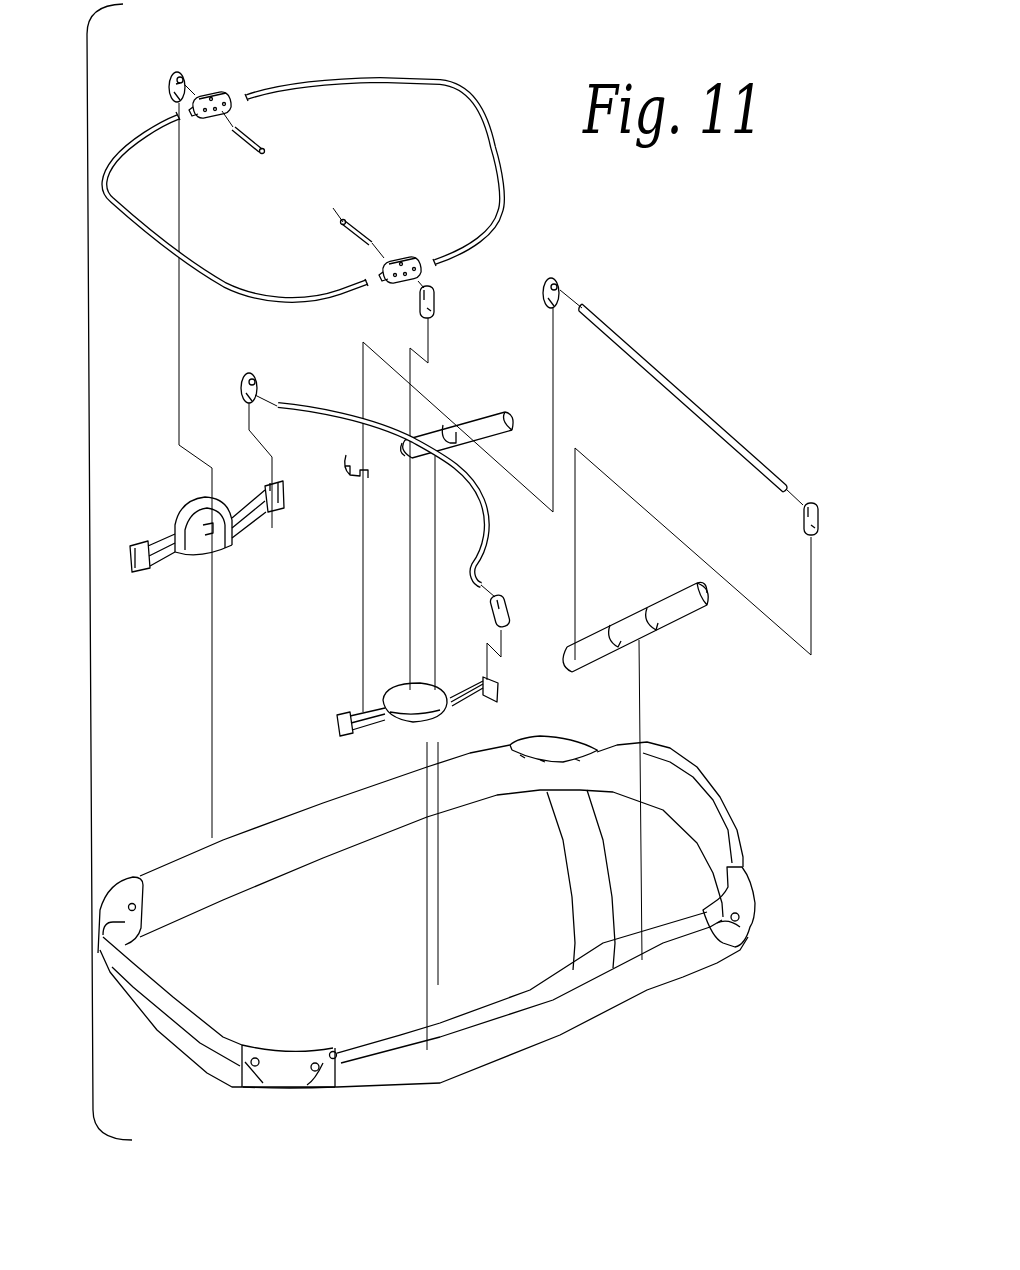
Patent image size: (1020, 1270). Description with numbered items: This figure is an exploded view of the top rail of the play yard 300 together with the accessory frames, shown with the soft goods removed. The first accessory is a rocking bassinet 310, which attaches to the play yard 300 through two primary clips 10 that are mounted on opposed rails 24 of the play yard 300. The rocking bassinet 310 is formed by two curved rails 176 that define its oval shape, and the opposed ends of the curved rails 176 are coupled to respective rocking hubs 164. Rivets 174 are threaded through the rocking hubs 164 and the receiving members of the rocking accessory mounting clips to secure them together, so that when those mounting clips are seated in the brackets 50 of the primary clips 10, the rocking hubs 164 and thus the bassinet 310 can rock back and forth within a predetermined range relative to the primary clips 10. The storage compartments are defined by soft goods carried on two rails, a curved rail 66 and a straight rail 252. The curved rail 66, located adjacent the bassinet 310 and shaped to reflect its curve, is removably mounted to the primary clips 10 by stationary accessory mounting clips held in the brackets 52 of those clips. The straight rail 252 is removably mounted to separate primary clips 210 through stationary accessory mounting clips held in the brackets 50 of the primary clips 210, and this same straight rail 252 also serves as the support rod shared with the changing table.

The primary clip 10 is at (127, 533).
The rail 24 is at (183, 863).
The bracket 50 is at (203, 537).
The bracket 52 is at (276, 527).
The curved rail 66 is at (495, 530).
The rocking hub 164 is at (213, 95).
The rivet 174 is at (263, 150).
The curved rail 176 is at (425, 78).
The primary clip 210 is at (510, 413).
The straight rail 252 is at (640, 352).
The play yard 300 is at (198, 1087).
The rocking bassinet 310 is at (341, 62).